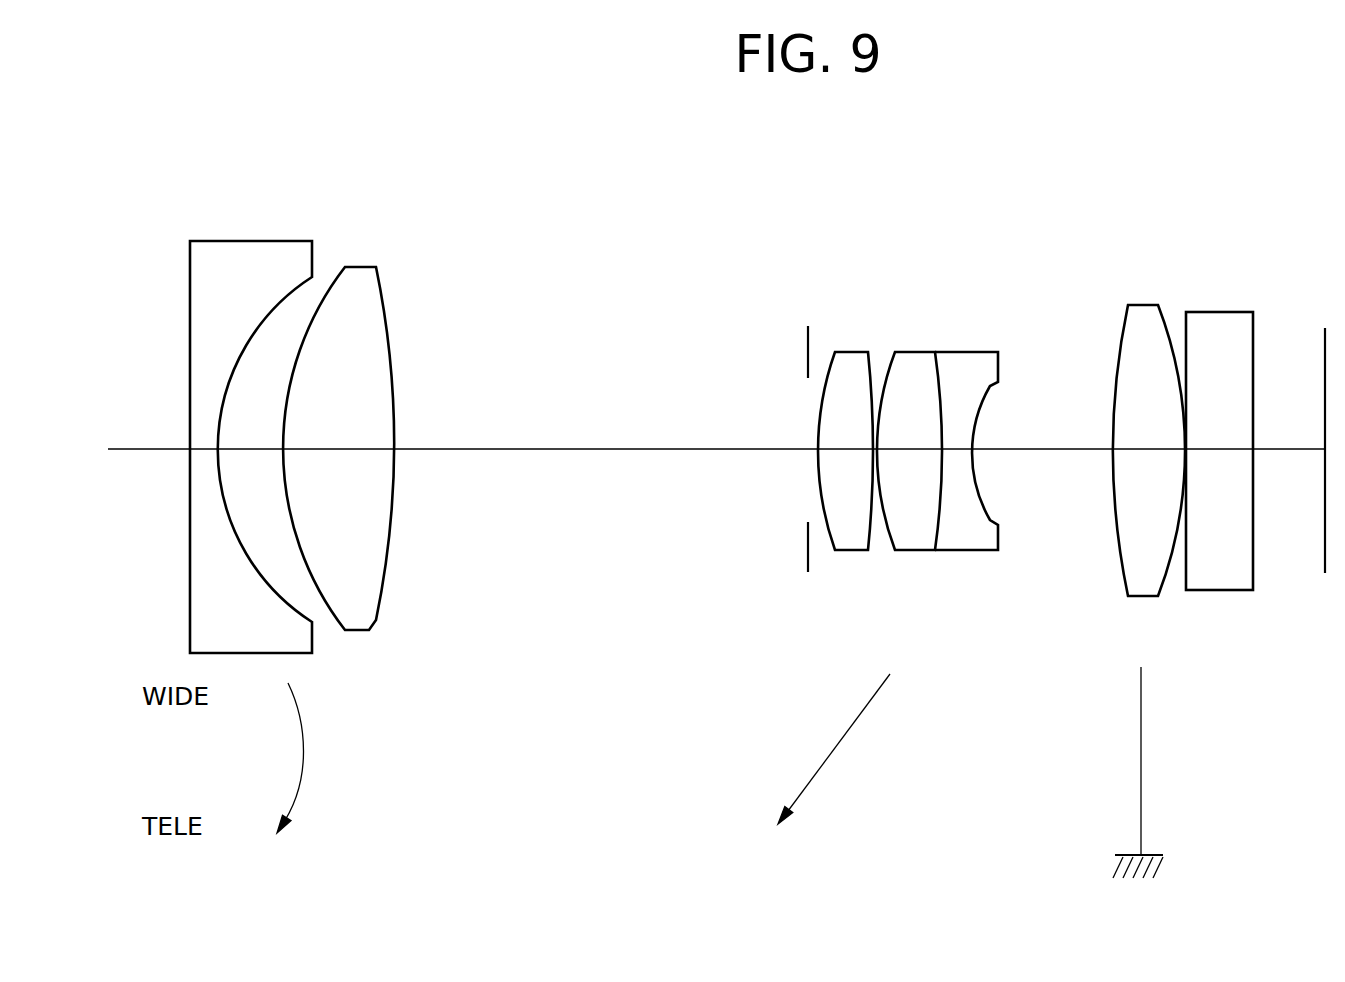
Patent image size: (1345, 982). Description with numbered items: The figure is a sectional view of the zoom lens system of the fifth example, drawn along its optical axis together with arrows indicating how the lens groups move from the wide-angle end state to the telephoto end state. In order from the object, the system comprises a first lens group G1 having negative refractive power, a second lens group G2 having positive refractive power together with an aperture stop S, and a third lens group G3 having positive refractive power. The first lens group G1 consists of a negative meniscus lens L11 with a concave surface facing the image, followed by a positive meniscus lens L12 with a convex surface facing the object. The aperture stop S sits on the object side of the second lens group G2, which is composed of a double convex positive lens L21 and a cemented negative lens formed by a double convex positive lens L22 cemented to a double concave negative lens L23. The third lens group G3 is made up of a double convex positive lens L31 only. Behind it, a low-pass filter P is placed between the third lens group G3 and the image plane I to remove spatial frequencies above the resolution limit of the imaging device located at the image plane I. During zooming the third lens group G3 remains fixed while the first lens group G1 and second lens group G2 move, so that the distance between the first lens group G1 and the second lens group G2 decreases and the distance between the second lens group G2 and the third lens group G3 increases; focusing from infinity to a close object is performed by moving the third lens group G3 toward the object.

The first lens group G1 is at (292, 389).
The negative meniscus lens L11 is at (247, 241).
The positive meniscus lens L12 is at (360, 267).
The aperture stop S is at (806, 345).
The second lens group G2 is at (914, 380).
The double convex positive lens L21 is at (858, 352).
The double convex positive lens L22 is at (918, 352).
The double concave negative lens L23 is at (963, 352).
The third lens group G3 is at (1146, 394).
The double convex positive lens L31 is at (1145, 305).
The low-pass filter P is at (1232, 312).
The image plane I is at (1323, 337).